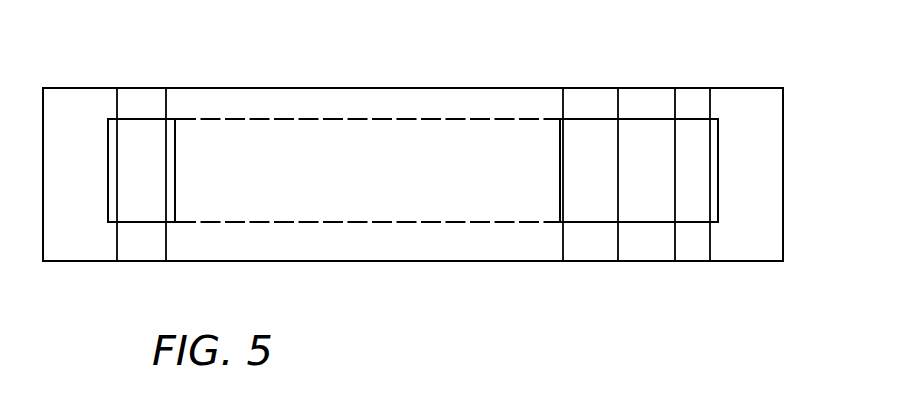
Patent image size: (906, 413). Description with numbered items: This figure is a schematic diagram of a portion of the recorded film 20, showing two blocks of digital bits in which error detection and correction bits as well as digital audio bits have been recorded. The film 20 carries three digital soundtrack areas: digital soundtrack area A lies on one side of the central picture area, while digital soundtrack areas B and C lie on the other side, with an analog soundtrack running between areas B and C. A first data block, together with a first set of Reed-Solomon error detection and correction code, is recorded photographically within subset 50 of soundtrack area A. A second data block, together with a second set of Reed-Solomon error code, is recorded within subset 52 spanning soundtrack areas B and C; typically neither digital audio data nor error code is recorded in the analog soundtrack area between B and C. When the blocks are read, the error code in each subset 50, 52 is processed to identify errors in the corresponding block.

The recorded film 20 is at (413, 265).
The subset of soundtrack area A 50 is at (154, 182).
The subset of soundtrack areas B and C 52 is at (602, 182).
The digital soundtrack area A is at (154, 148).
The digital soundtrack area B is at (575, 151).
The digital soundtrack area C is at (710, 151).